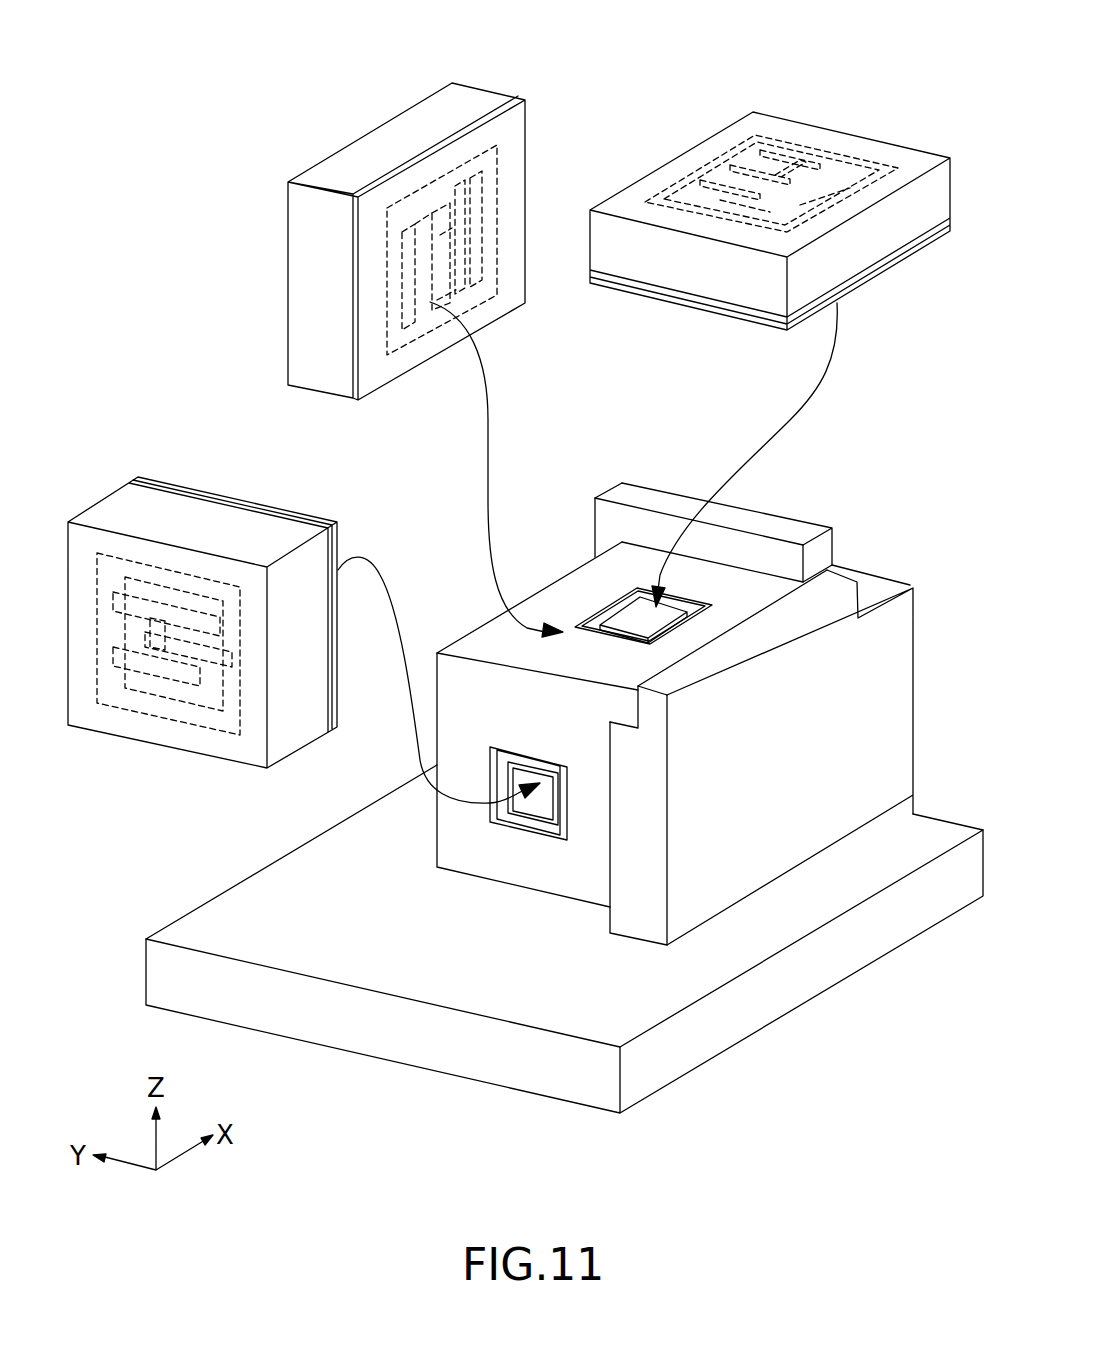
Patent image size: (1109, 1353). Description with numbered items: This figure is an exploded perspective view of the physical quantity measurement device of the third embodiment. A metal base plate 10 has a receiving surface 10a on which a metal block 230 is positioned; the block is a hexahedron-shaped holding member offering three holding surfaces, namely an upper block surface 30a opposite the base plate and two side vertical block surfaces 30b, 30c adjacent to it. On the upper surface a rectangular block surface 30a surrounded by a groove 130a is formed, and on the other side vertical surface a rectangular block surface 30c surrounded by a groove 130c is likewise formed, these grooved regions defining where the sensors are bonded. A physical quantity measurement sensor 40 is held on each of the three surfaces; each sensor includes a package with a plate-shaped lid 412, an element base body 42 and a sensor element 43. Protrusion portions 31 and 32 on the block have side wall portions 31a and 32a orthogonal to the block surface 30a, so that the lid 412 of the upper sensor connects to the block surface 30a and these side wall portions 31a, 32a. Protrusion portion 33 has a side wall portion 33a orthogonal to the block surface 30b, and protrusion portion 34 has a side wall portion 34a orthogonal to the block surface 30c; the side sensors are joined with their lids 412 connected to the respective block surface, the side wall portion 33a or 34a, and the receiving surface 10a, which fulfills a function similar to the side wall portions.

The metal base plate 10 is at (564, 939).
The receiving surface 10a is at (803, 918).
The metal block 230 is at (693, 684).
The block surface 30a is at (643, 615).
The block surface 30b is at (503, 643).
The block surface 30c is at (507, 825).
The groove 130a is at (582, 566).
The groove 130c is at (497, 847).
The protrusion portion 31 is at (774, 519).
The side wall portion 31a is at (785, 570).
The protrusion portion 32 is at (766, 755).
The side wall portion 32a is at (625, 722).
The protrusion portion 33 is at (659, 507).
The side wall portion 33a is at (610, 537).
The protrusion portion 34 is at (597, 815).
The side wall portion 34a is at (633, 702).
The physical quantity measurement sensor 40 is at (516, 421).
The lid 412 is at (509, 429).
The element base body 42 is at (497, 430).
The sensor element 43 is at (458, 235).